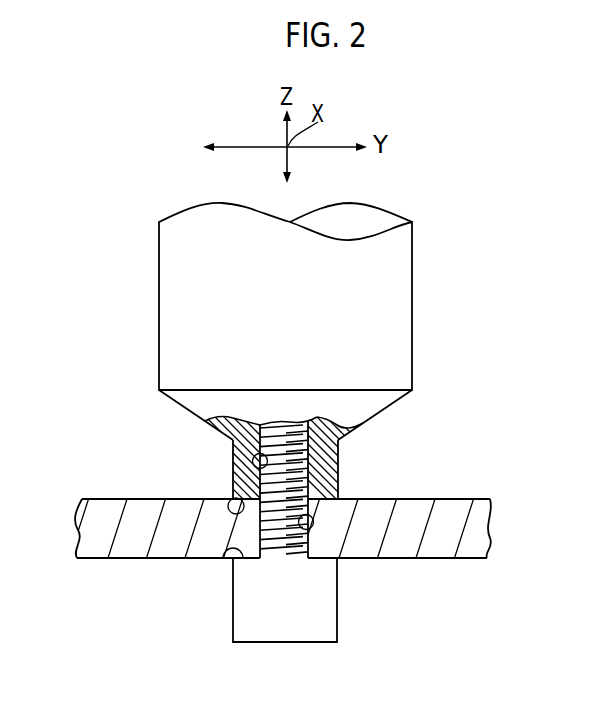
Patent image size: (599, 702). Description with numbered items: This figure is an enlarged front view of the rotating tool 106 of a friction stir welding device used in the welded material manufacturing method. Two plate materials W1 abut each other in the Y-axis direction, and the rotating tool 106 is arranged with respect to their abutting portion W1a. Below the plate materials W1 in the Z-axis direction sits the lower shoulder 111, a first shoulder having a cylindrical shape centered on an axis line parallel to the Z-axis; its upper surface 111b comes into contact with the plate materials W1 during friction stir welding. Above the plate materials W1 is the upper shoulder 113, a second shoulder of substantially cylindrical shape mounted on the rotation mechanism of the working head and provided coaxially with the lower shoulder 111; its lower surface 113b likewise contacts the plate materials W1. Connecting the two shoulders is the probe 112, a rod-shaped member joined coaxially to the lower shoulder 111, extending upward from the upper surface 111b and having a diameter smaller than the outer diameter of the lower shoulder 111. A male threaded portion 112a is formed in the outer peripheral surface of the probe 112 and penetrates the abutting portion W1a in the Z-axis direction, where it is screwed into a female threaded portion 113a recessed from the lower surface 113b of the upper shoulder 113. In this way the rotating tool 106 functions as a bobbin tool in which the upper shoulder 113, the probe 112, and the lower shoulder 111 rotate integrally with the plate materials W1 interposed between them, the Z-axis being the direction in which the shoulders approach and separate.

The rotating tool 106 is at (463, 243).
The lower shoulder 111 is at (318, 613).
The upper surface 111b is at (232, 547).
The probe 112 is at (338, 439).
The male threaded portion 112a is at (310, 472).
The upper shoulder 113 is at (398, 308).
The female threaded portion 113a is at (258, 462).
The lower surface 113b is at (237, 507).
The plate materials W1 is at (112, 510).
The abutting portion W1a is at (310, 515).